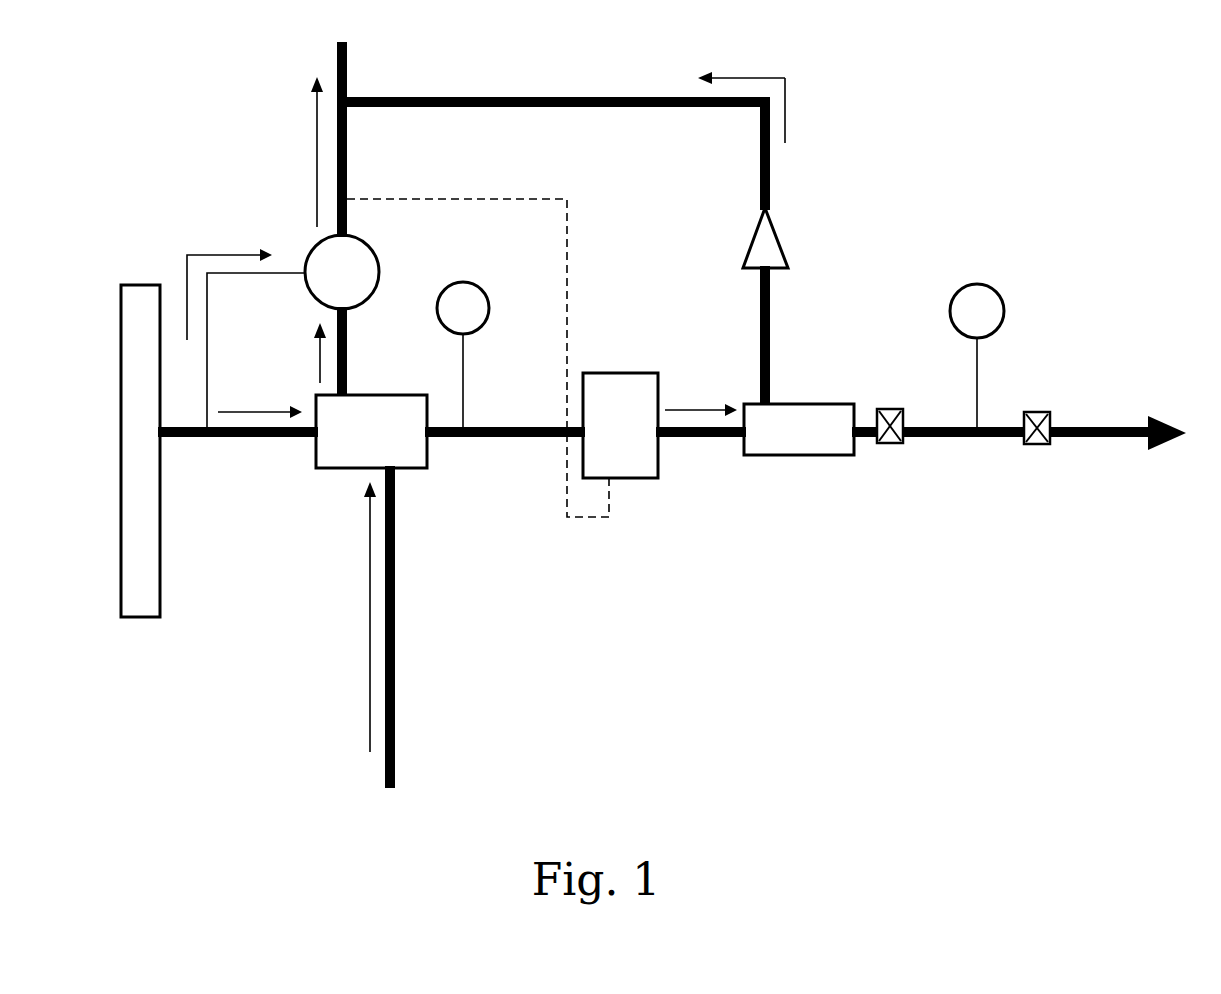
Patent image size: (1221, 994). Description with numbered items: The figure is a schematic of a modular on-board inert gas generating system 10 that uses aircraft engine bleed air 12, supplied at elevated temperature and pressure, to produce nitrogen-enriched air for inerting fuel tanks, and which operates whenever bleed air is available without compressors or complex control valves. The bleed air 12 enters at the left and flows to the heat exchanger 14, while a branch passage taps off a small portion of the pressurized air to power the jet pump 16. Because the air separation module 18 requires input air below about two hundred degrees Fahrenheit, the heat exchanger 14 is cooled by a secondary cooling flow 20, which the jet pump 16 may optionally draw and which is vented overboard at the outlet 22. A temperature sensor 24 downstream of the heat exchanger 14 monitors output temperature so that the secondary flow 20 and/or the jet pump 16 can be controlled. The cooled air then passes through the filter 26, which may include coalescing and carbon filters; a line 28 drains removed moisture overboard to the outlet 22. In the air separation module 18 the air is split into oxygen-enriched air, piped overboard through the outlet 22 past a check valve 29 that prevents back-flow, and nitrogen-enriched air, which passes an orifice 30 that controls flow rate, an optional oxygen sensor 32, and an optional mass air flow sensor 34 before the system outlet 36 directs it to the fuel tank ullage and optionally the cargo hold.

The system 10 is at (1052, 104).
The bleed air 12 is at (160, 512).
The heat exchanger 14 is at (427, 458).
The jet pump 16 is at (374, 257).
The air separation module 18 is at (817, 455).
The secondary cooling flow 20 is at (385, 767).
The outlet 22 is at (337, 47).
The temperature sensor 24 is at (478, 285).
The filter 26 is at (658, 455).
The line 28 is at (567, 307).
The check valve 29 is at (773, 228).
The orifice 30 is at (903, 440).
The oxygen sensor 32 is at (990, 284).
The mass air flow sensor 34 is at (1050, 440).
The system outlet 36 is at (1126, 426).